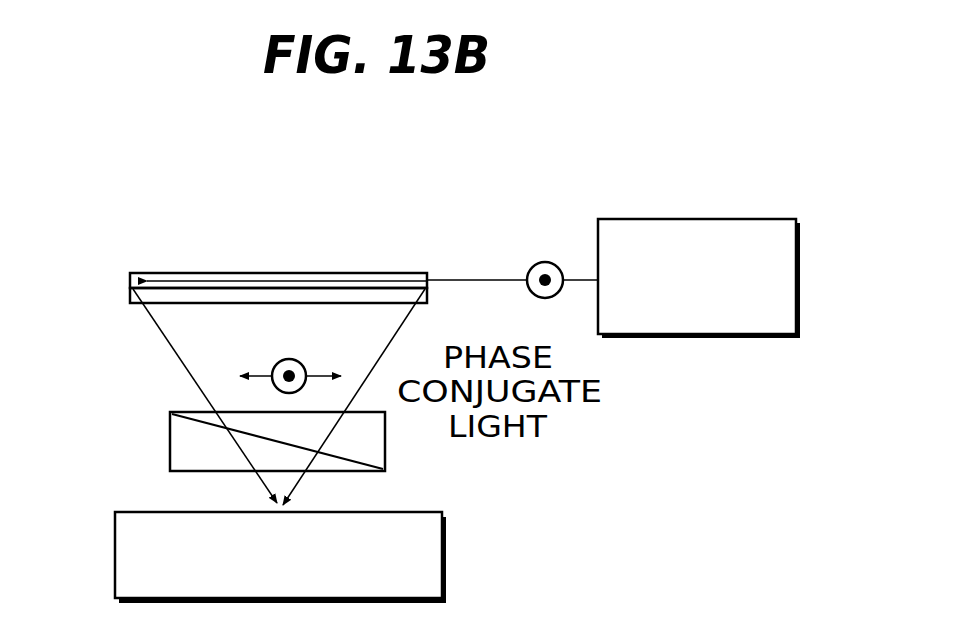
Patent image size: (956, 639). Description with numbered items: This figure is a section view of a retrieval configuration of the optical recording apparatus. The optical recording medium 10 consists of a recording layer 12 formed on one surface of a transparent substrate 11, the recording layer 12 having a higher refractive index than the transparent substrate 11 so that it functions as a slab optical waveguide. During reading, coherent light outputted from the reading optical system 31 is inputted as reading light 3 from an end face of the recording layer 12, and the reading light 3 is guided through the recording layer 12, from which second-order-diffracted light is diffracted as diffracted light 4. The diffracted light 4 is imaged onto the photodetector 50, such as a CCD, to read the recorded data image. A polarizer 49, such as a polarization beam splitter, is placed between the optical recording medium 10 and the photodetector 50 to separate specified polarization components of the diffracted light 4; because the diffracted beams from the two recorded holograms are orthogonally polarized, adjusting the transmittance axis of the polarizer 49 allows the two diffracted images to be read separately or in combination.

The reading light 3 is at (483, 279).
The diffracted light 4 is at (175, 355).
The optical recording medium 10 is at (236, 254).
The transparent substrate 11 is at (131, 300).
The recording layer 12 is at (131, 288).
The reading optical system 31 is at (742, 336).
The polarizer 49 is at (385, 440).
The photodetector 50 is at (447, 556).